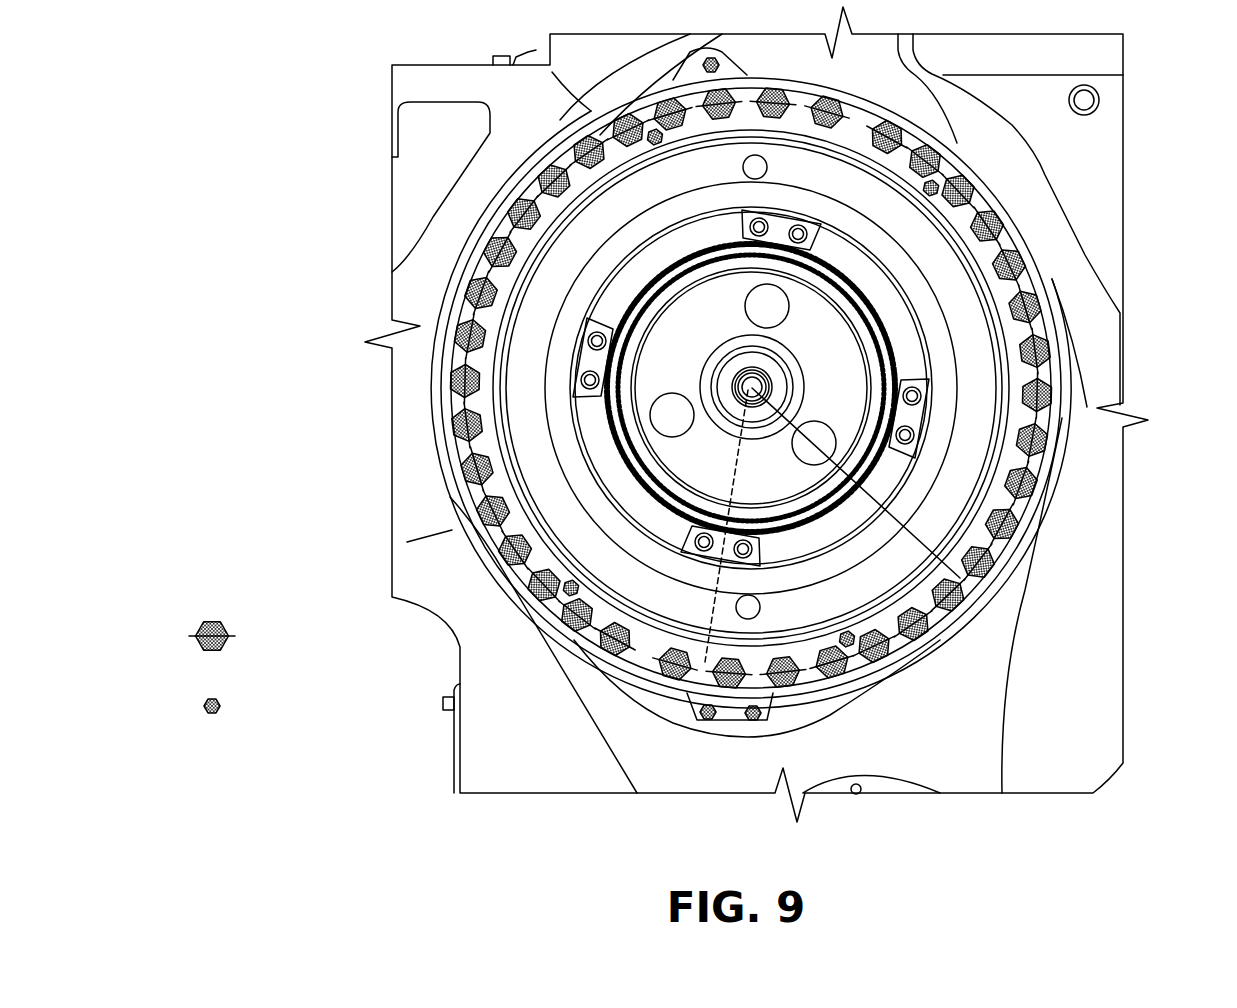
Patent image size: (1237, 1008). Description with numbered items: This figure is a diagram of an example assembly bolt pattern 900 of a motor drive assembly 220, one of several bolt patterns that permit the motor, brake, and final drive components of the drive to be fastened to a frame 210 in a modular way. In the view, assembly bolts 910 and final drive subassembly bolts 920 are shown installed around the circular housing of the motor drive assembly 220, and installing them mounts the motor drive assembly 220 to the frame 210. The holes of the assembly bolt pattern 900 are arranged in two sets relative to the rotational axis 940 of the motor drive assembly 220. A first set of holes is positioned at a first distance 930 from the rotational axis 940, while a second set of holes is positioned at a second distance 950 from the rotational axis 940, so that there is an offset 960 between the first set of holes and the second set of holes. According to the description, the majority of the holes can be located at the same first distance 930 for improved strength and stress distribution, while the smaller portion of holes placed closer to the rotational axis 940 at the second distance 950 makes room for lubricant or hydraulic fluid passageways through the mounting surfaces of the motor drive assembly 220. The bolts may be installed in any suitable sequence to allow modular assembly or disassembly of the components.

The assembly bolt pattern 900 is at (232, 51).
The motor drive assembly 220 is at (465, 52).
The frame 210 is at (660, 752).
The assembly bolts 910 is at (620, 388).
The final drive subassembly bolts 920 is at (573, 423).
The first distance 930 is at (917, 540).
The rotational axis 940 is at (748, 385).
The second distance 950 is at (714, 578).
The offset 960 is at (743, 108).